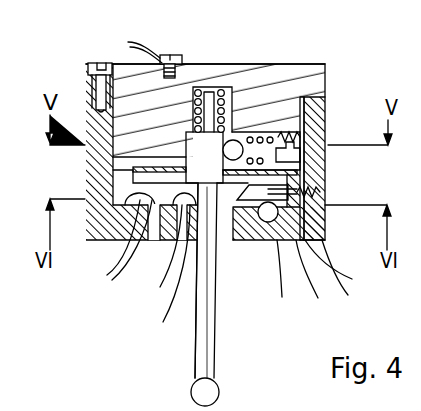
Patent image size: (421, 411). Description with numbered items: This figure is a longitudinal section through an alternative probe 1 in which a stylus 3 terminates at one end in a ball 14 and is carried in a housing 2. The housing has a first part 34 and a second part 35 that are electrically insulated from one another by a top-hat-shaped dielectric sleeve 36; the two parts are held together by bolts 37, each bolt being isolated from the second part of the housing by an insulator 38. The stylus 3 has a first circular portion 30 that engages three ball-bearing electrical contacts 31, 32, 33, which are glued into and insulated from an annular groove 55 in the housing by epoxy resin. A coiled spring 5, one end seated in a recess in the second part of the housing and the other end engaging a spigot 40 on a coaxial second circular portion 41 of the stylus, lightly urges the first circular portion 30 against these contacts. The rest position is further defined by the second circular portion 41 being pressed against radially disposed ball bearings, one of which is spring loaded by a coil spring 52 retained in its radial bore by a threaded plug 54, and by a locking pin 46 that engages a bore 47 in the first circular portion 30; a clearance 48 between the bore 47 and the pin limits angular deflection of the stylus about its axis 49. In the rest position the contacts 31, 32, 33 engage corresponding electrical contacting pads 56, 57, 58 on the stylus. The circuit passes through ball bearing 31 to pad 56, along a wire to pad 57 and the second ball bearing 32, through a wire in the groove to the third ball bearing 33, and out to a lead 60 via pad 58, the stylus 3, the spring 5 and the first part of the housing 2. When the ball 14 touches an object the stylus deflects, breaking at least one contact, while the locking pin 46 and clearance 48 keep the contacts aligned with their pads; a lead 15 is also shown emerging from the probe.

The probe 1 is at (219, 65).
The housing 2 is at (327, 66).
The stylus 3 is at (218, 271).
The coiled spring 5 is at (222, 86).
The ball 14 is at (219, 388).
The lead wires 15 is at (121, 277).
The first circular portion 30 is at (133, 183).
The electrical contact 31 is at (143, 201).
The electrical contact 32 is at (160, 259).
The electrical contact 33 is at (345, 276).
The first part of the housing 34 is at (322, 228).
The second part of the housing 35 is at (210, 125).
The dielectric sleeve 36 is at (320, 99).
The bolt 37 is at (97, 63).
The insulator 38 is at (89, 80).
The spigot 40 is at (252, 104).
The second circular portion 41 is at (308, 120).
The locking pin 46 is at (320, 191).
The bore 47 is at (289, 280).
The clearance 48 is at (322, 240).
The axis 49 is at (205, 317).
The coil spring 52 is at (307, 148).
The threaded plug 54 is at (298, 172).
The annular groove 55 is at (297, 261).
The electrical contacting pad 56 is at (118, 217).
The electrical contacting pad 57 is at (171, 276).
The electrical contacting pad 58 is at (340, 266).
The lead 60 is at (162, 55).